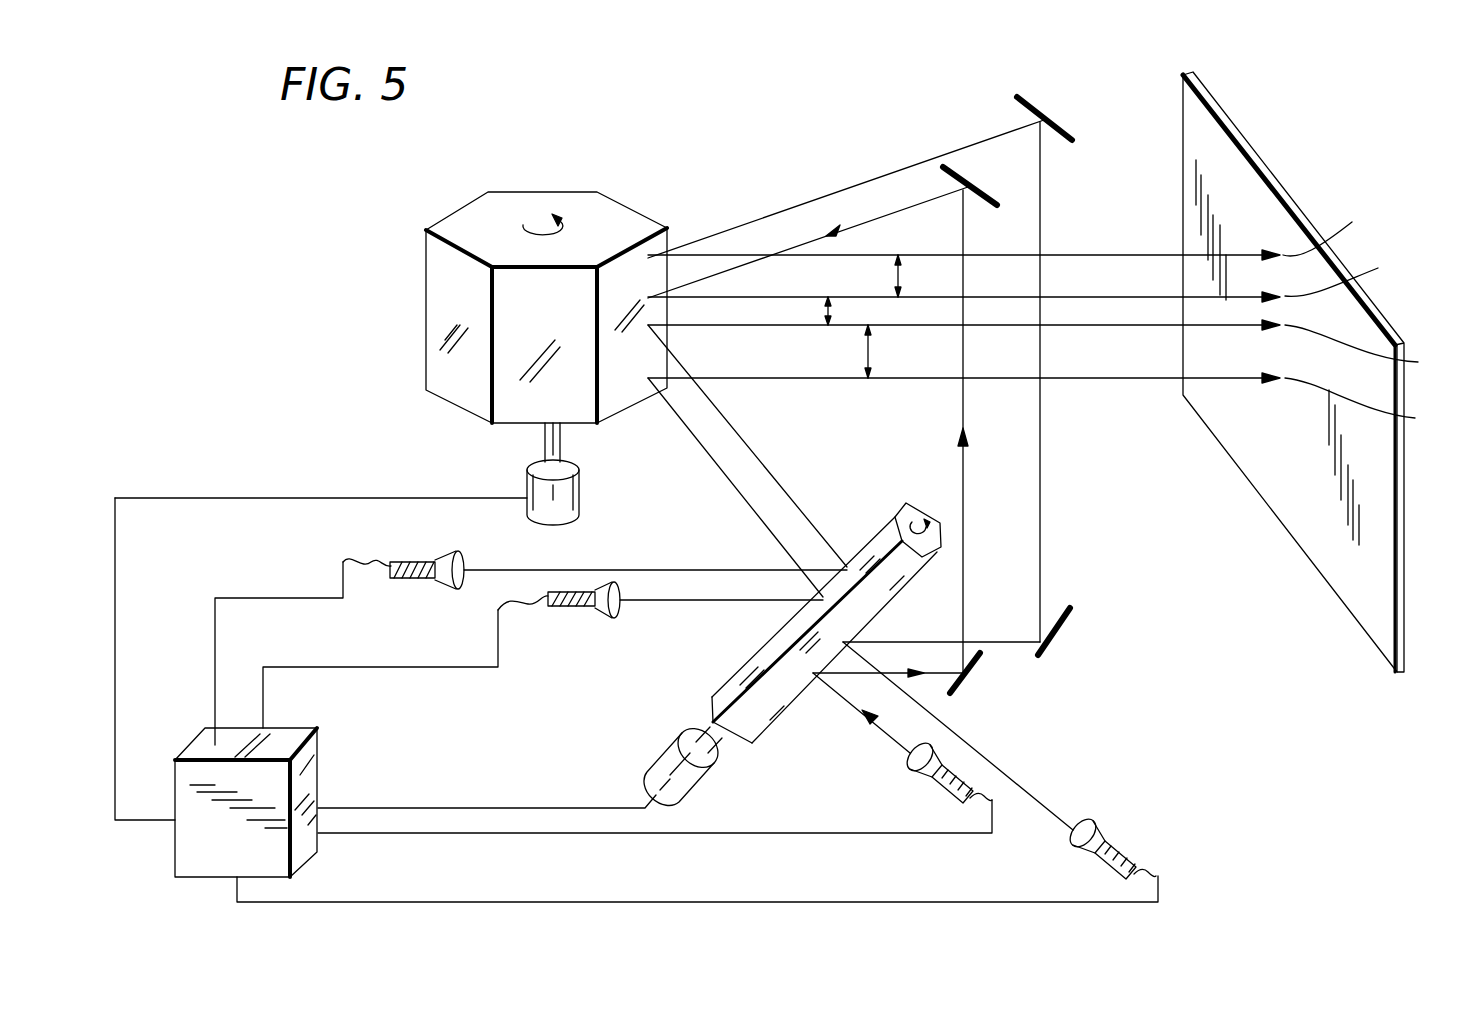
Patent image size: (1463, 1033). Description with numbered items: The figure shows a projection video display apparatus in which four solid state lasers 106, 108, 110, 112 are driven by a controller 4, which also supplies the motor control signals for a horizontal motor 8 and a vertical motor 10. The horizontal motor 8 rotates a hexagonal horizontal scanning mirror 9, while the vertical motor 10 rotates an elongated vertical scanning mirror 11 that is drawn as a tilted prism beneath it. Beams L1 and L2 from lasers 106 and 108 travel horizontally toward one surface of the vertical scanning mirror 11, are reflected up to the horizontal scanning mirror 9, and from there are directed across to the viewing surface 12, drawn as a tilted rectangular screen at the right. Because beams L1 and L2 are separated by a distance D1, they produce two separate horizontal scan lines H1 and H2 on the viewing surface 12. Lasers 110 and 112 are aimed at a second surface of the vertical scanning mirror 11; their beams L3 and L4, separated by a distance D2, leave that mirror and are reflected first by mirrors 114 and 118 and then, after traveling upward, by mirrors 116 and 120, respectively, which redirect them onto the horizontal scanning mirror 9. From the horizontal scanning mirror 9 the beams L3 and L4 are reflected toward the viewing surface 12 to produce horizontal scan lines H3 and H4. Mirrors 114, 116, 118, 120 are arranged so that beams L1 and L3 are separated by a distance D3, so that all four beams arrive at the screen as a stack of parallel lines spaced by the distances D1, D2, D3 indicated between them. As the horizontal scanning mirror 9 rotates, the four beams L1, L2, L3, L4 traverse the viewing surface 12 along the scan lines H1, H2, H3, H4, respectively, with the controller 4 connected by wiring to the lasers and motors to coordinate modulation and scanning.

The controller 4 is at (318, 778).
The horizontal motor 8 is at (579, 493).
The horizontal scanning mirror 9 is at (491, 204).
The vertical motor 10 is at (652, 758).
The vertical scanning mirror 11 is at (894, 508).
The viewing surface 12 is at (1300, 210).
The solid state laser 106 is at (420, 580).
The solid state laser 108 is at (578, 608).
The solid state laser 110 is at (940, 793).
The solid state laser 112 is at (1123, 860).
The mirror 114 is at (985, 685).
The mirror 116 is at (972, 182).
The mirror 118 is at (1065, 650).
The mirror 120 is at (1070, 125).
The beam L1 is at (1133, 330).
The beam L2 is at (1118, 374).
The beam L3 is at (1126, 268).
The beam L4 is at (1088, 232).
The horizontal scan line H1 is at (1367, 353).
The horizontal scan line H2 is at (1367, 409).
The horizontal scan line H3 is at (1349, 275).
The horizontal scan line H4 is at (1336, 233).
The distance D1 is at (867, 352).
The distance D2 is at (896, 275).
The distance D3 is at (821, 300).